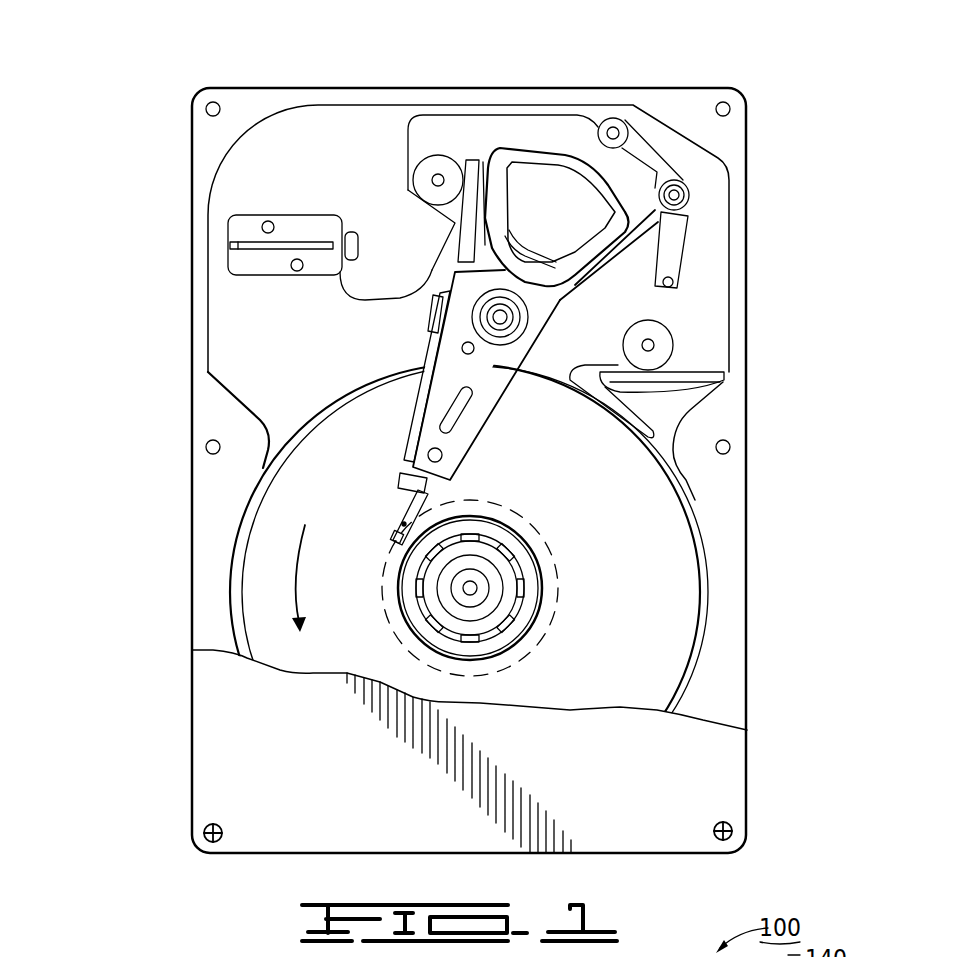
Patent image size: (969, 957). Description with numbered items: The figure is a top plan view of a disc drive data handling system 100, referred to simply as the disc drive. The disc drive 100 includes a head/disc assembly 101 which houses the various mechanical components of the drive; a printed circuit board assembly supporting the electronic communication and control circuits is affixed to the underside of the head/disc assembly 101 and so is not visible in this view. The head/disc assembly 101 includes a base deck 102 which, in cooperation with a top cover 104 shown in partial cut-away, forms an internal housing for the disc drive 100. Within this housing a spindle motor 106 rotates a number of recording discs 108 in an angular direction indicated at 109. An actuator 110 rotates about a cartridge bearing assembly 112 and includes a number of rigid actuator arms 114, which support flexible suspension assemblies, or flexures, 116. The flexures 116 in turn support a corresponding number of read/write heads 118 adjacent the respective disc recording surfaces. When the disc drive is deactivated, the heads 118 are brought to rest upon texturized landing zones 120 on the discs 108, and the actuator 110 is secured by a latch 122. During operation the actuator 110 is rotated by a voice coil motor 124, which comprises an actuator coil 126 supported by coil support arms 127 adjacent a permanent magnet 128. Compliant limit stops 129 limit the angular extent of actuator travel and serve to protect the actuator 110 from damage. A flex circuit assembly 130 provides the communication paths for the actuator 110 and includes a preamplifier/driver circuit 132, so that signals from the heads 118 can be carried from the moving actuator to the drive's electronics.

The disc drive data handling system 100 is at (196, 60).
The head/disc assembly 101 is at (258, 159).
The base deck 102 is at (238, 330).
The top cover 104 is at (238, 735).
The spindle motor 106 is at (506, 573).
The recording discs 108 is at (680, 592).
The angular direction 109 is at (296, 572).
The actuator 110 is at (470, 428).
The cartridge bearing assembly 112 is at (517, 315).
The rigid actuator arms 114 is at (486, 378).
The flexible suspension assemblies 116 is at (407, 490).
The read/write heads 118 is at (400, 522).
The texturized landing zones 120 is at (540, 650).
The latch 122 is at (680, 240).
The voice coil motor 124 is at (558, 124).
The actuator coil 126 is at (517, 150).
The coil support arms 127 is at (472, 168).
The permanent magnet 128 is at (668, 306).
The compliant limit stops 129 is at (435, 165).
The flex circuit assembly 130 is at (349, 304).
The preamplifier/driver circuit 132 is at (428, 313).